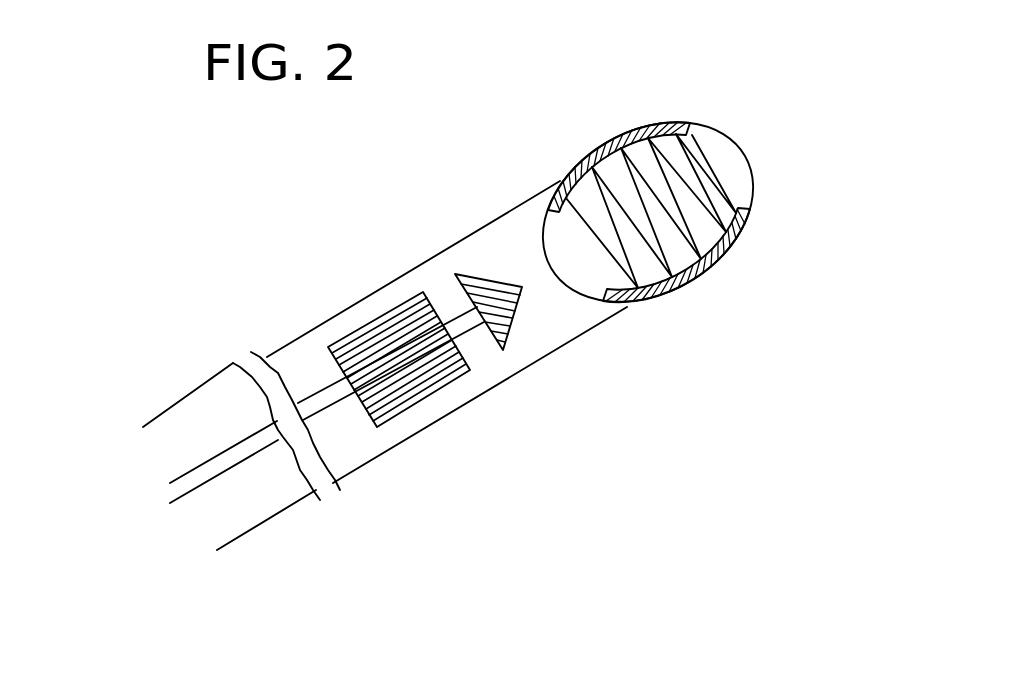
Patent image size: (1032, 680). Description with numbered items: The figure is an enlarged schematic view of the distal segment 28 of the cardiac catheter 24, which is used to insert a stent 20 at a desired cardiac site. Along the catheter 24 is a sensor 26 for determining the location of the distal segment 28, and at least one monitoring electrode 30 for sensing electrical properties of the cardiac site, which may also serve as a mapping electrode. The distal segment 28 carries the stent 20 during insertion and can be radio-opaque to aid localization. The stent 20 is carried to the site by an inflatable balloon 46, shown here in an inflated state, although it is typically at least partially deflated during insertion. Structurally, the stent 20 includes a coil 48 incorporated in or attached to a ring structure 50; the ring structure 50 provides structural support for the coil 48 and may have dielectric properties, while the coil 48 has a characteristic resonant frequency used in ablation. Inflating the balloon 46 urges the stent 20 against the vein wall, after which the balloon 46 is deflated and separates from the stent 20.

The stent 20 is at (563, 97).
The cardiac catheter 24 is at (145, 385).
The sensor 26 is at (365, 344).
The distal segment 28 is at (808, 338).
The monitoring electrode 30 is at (468, 276).
The inflatable balloon 46 is at (585, 270).
The coil 48 is at (697, 183).
The ring structure 50 is at (662, 122).